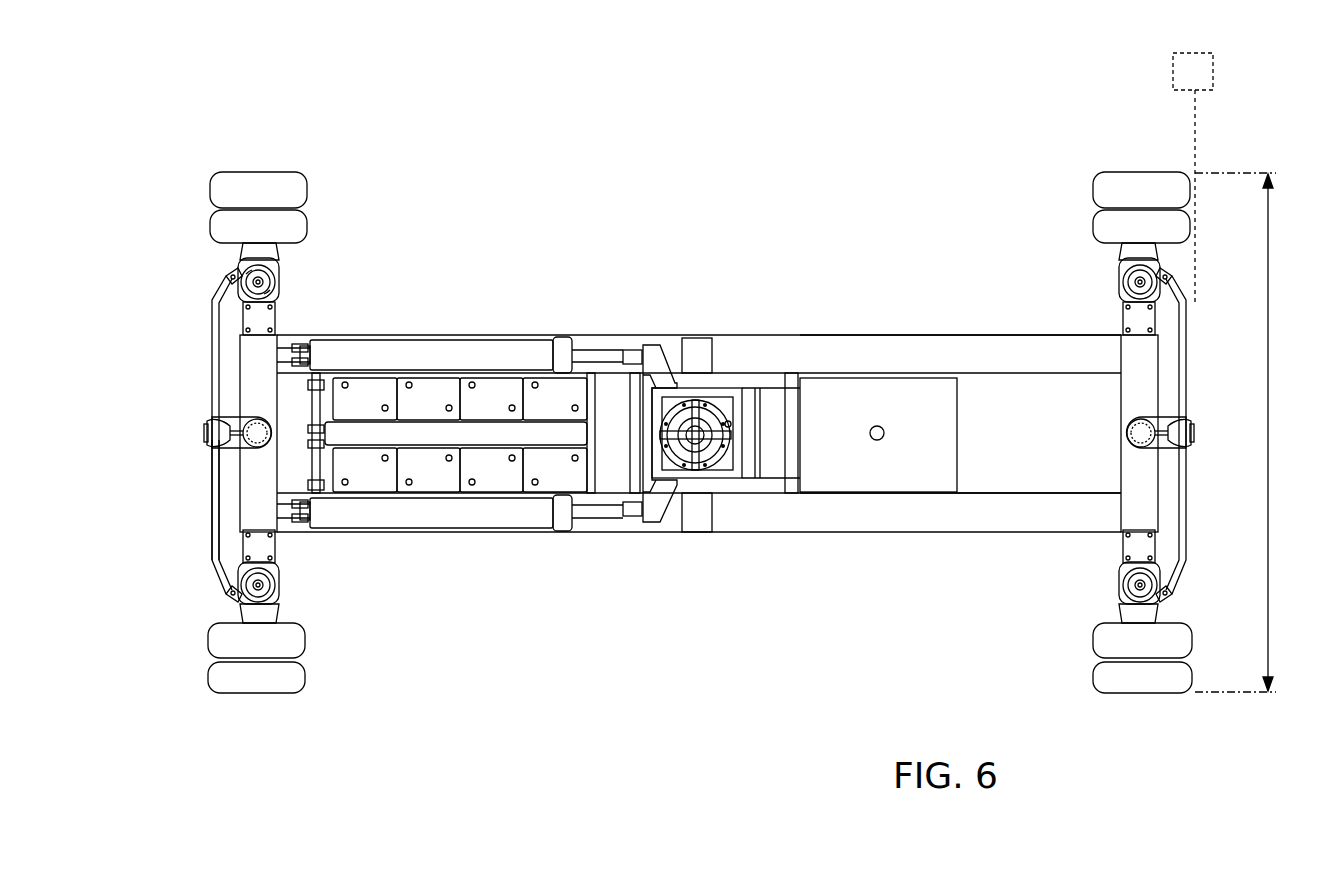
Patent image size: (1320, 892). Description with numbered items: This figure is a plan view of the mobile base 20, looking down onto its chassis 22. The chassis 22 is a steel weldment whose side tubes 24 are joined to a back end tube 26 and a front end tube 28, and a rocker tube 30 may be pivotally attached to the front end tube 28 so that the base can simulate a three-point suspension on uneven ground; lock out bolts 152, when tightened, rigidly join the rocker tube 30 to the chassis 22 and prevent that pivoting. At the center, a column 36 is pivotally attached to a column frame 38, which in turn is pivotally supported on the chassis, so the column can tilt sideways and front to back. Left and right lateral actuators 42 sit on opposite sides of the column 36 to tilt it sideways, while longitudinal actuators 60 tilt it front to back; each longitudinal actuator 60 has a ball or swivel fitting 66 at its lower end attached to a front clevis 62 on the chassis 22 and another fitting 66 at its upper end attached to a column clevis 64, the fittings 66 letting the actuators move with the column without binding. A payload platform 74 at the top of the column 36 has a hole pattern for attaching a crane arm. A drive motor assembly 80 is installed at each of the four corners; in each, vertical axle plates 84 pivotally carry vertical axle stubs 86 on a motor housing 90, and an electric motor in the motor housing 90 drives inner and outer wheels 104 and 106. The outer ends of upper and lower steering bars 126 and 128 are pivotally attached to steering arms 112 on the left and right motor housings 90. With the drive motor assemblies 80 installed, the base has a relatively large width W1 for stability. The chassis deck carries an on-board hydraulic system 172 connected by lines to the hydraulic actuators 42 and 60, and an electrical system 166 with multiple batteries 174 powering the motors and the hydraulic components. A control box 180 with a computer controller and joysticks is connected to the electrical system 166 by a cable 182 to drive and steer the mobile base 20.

The mobile base 20 is at (864, 358).
The chassis 22 is at (893, 337).
The side tubes 24 is at (957, 345).
The back end tube 26 is at (1132, 503).
The front end tube 28 is at (300, 408).
The rocker tube 30 is at (250, 503).
The column 36 is at (718, 417).
The column frame 38 is at (732, 475).
The lateral actuators 42 is at (697, 340).
The longitudinal actuators 60 is at (478, 350).
The front clevis 62 is at (285, 518).
The column clevis 64 is at (645, 515).
The ball or swivel fitting 66 is at (626, 353).
The payload platform 74 is at (733, 420).
The drive motor assembly 80 is at (229, 613).
The vertical axle plates 84 is at (266, 322).
The vertical axle stubs 86 is at (270, 282).
The motor housing 90 is at (247, 258).
The inner wheel 104 is at (302, 228).
The outer wheel 106 is at (302, 192).
The steering arms 112 is at (226, 273).
The upper steering bar 126 is at (212, 347).
The lower steering bar 128 is at (212, 480).
The lock out bolts 152 is at (493, 437).
The electrical system 166 is at (1005, 405).
The hydraulic system 172 is at (1040, 470).
The batteries 174 is at (440, 480).
The control box 180 is at (1173, 70).
The communication link 182 is at (1190, 106).
The width W1 is at (1284, 445).